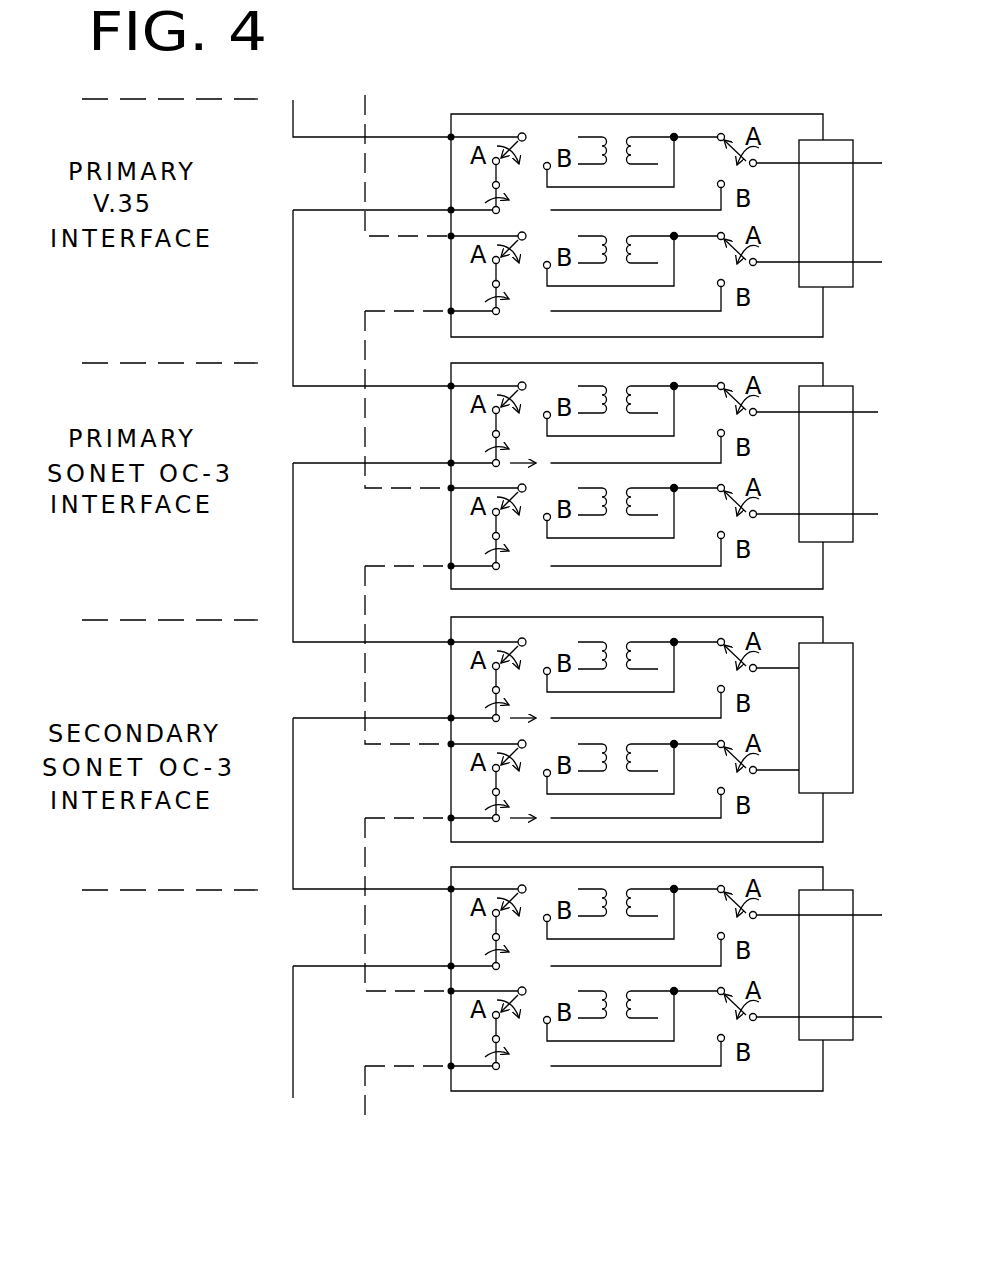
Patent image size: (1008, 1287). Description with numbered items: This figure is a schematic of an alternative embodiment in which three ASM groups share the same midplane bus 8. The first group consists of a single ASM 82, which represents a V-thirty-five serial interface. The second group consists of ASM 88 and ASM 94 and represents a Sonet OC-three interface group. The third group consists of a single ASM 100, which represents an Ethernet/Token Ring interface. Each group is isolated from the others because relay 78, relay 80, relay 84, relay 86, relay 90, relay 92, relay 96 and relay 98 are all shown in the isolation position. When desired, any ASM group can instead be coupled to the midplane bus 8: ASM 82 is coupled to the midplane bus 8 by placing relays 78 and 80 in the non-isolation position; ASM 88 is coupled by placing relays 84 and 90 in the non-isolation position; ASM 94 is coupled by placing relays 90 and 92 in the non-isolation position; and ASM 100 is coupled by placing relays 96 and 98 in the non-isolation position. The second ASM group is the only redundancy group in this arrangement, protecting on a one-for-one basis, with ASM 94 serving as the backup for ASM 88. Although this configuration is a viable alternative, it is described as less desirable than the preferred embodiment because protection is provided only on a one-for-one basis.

The midplane bus 8 is at (293, 210).
The relay 78 is at (522, 133).
The relay 80 is at (492, 234).
The ASM 82 is at (775, 227).
The relay 84 is at (522, 382).
The relay 86 is at (507, 513).
The ASM 88 is at (767, 470).
The relay 90 is at (490, 638).
The relay 92 is at (520, 743).
The ASM 94 is at (773, 735).
The relay 96 is at (522, 885).
The relay 98 is at (508, 1017).
The ASM 100 is at (783, 960).